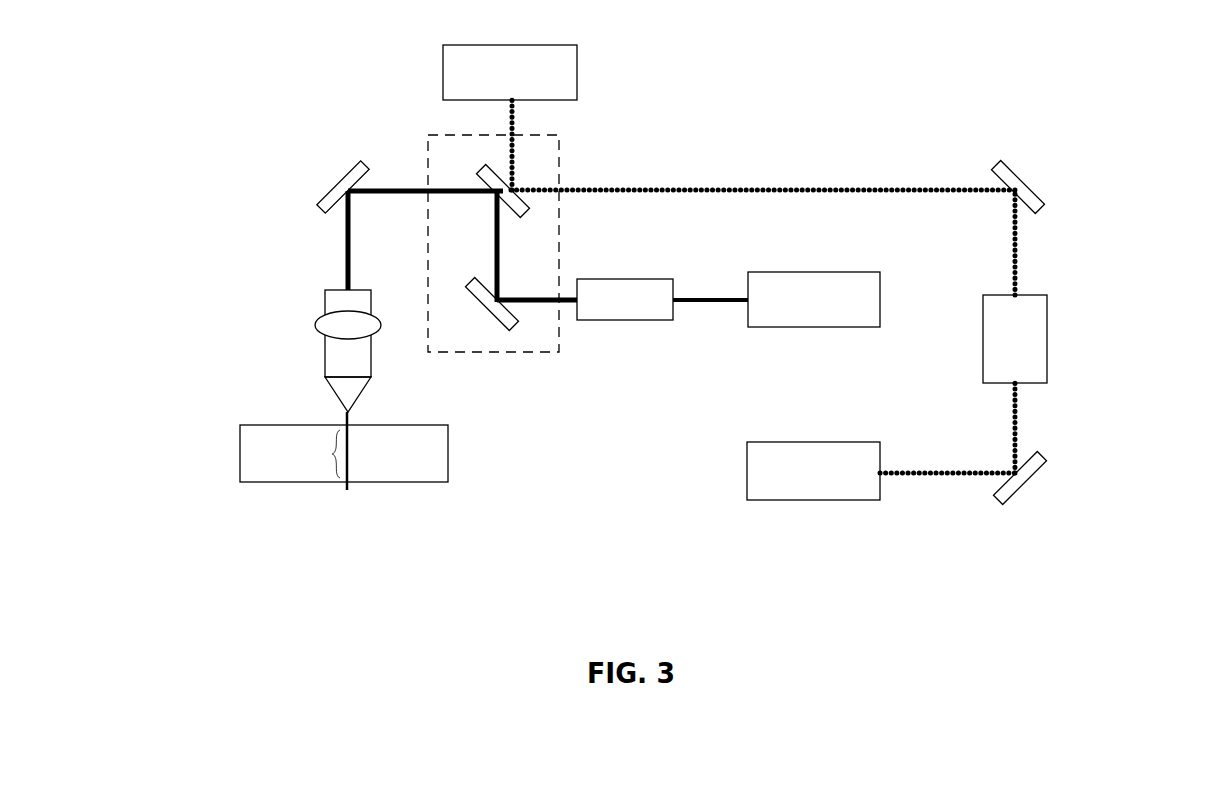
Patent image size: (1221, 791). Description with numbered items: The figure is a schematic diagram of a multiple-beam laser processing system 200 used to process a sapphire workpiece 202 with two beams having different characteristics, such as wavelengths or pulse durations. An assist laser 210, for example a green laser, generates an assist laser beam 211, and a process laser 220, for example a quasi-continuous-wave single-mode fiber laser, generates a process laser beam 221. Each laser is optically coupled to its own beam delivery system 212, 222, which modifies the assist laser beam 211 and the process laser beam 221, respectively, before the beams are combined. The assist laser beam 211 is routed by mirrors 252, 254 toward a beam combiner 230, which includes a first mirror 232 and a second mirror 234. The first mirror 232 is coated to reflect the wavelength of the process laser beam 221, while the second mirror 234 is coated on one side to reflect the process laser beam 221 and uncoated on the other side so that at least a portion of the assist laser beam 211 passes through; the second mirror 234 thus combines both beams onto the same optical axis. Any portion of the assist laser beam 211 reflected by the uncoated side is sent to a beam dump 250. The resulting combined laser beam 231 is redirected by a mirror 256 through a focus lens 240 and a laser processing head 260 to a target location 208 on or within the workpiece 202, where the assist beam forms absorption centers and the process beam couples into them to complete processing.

The multiple-beam laser processing system 200 is at (760, 90).
The workpiece 202 is at (240, 443).
The target location 208 is at (320, 454).
The assist laser 210 is at (812, 501).
The assist laser beam 211 is at (669, 196).
The beam delivery system 212 is at (1048, 335).
The process laser 220 is at (812, 328).
The process laser beam 221 is at (708, 304).
The beam delivery system 222 is at (628, 321).
The beam combiner 230 is at (558, 160).
The combined laser beam 231 is at (412, 190).
The first mirror 232 is at (490, 315).
The second mirror 234 is at (528, 208).
The focus lens 240 is at (315, 325).
The beam dump 250 is at (443, 72).
The mirror 252 is at (1023, 488).
The mirror 254 is at (1034, 200).
The mirror 256 is at (320, 195).
The laser processing head 260 is at (334, 390).